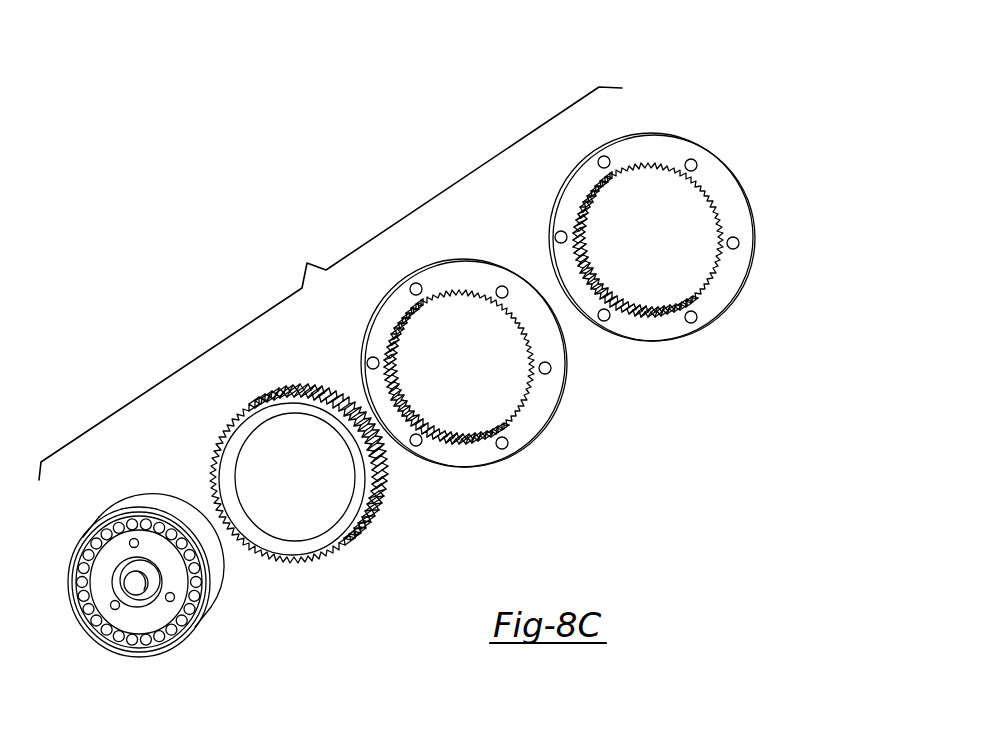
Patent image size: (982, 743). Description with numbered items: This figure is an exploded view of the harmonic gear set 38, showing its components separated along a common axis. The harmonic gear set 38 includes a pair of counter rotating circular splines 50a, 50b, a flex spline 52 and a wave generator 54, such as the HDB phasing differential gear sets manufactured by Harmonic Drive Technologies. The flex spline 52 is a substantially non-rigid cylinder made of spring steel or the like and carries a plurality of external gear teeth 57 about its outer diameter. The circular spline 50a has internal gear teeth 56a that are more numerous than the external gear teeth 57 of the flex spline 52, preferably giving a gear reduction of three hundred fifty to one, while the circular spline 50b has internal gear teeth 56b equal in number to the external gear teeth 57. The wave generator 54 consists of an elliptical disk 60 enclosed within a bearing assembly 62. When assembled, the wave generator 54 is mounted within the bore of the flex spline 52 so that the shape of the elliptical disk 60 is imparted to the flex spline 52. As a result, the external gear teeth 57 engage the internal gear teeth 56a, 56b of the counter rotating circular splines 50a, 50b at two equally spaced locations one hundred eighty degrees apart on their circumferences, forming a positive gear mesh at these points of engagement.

The harmonic gear set 38 is at (330, 283).
The circular spline 50a is at (456, 254).
The circular spline 50b is at (722, 317).
The flex spline 52 is at (365, 530).
The wave generator 54 is at (180, 647).
The internal gear teeth 56a is at (403, 320).
The internal gear teeth 56b is at (708, 206).
The external gear teeth 57 is at (305, 393).
The elliptical disk 60 is at (172, 579).
The bearing assembly 62 is at (125, 617).